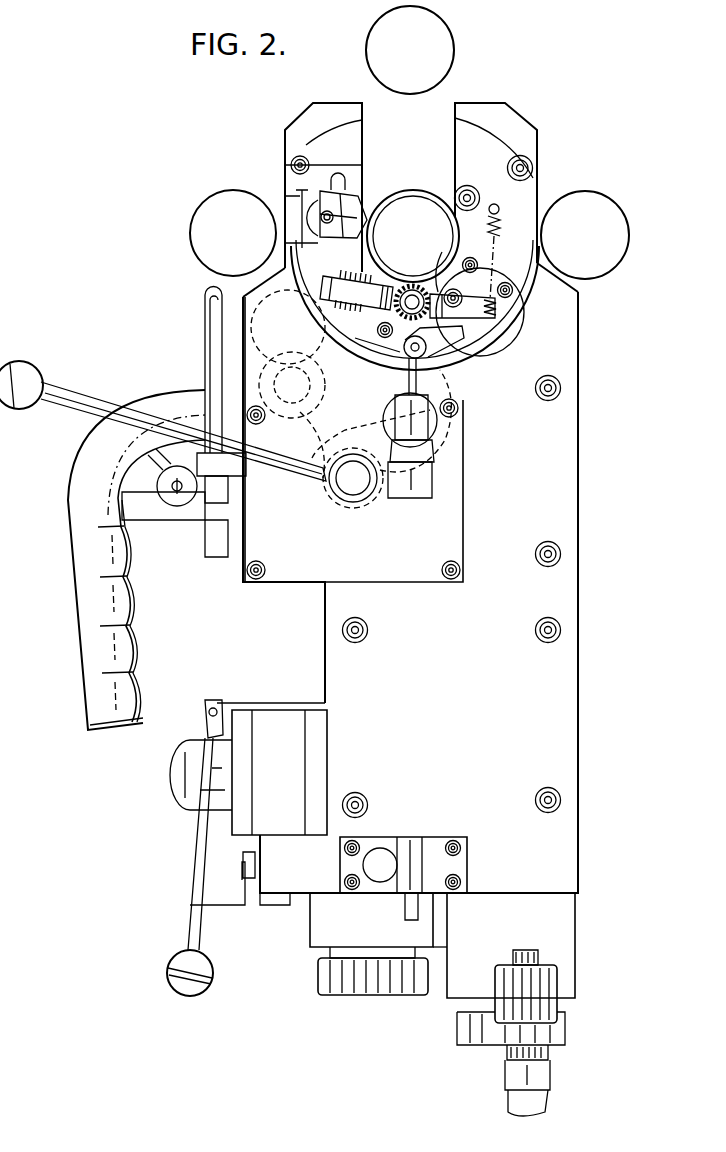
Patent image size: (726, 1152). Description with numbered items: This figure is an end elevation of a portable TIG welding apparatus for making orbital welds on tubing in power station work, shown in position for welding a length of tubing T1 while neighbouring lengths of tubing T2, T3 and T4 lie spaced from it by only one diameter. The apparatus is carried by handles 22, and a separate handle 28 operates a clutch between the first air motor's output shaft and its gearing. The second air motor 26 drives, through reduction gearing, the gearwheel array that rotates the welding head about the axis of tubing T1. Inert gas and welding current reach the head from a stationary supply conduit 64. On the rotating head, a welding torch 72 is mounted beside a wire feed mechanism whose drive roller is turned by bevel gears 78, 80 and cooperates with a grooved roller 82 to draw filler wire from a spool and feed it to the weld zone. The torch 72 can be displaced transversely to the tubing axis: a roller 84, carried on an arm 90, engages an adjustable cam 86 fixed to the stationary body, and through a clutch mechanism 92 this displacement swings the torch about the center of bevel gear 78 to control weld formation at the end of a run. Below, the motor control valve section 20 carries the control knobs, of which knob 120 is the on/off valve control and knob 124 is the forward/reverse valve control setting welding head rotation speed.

The tubing T1 is at (400, 192).
The tubing T2 is at (622, 228).
The tubing T3 is at (203, 208).
The tubing T4 is at (452, 58).
The motor control valve section 20 is at (333, 916).
The handle 22 is at (90, 638).
The air motor 26 is at (273, 780).
The handle 28 is at (200, 920).
The stationary supply conduit 64 is at (425, 872).
The welding torch 72 is at (335, 196).
The bevel gear 78 is at (440, 265).
The bevel gear 80 is at (410, 287).
The grooved roller 82 is at (385, 298).
The roller 84 is at (405, 352).
The adjustable cam 86 is at (458, 411).
The arm 90 is at (436, 343).
The clutch mechanism 92 is at (500, 320).
The knob 120 is at (495, 1040).
The knob 124 is at (392, 982).